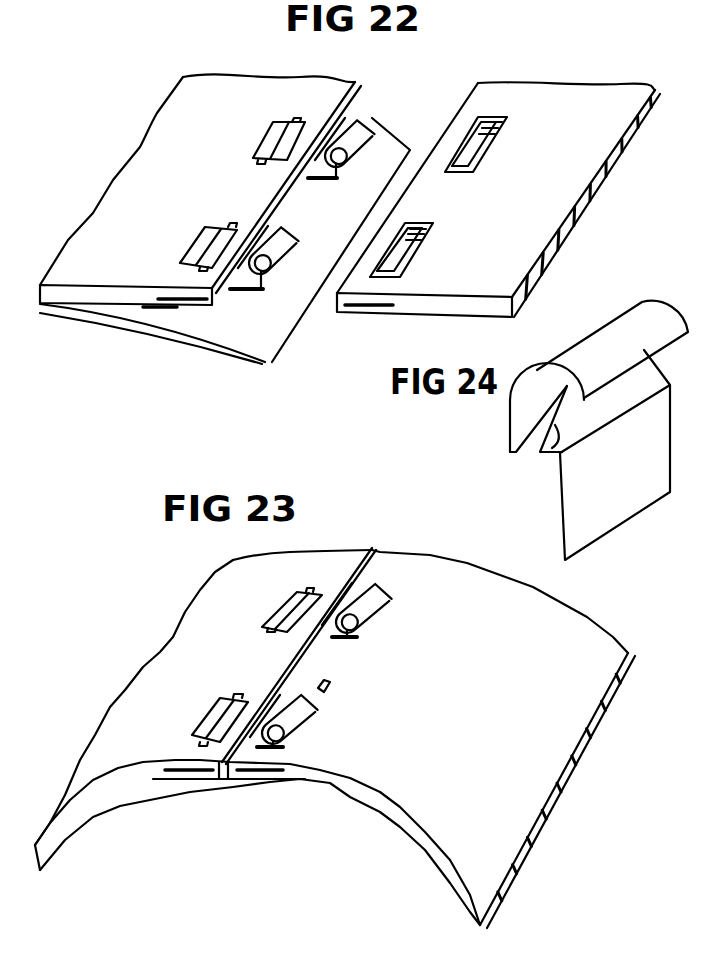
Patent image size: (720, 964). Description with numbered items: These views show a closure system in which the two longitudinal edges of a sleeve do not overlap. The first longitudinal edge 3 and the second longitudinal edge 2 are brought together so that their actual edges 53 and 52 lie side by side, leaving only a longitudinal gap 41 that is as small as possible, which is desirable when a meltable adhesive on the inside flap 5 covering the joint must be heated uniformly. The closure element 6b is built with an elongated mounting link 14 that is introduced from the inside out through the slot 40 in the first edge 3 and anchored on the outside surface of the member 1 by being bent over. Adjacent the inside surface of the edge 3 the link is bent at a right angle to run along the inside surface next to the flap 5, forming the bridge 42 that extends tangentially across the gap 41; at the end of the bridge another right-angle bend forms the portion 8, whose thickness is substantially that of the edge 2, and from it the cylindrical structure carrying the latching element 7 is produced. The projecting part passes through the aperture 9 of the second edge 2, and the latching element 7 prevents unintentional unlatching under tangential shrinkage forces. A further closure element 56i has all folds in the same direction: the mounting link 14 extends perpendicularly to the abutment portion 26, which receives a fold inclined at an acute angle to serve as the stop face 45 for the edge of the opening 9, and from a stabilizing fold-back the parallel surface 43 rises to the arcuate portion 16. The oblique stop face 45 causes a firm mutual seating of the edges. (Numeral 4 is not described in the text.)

In FIG. 22, the member 1 is at (570, 230).
In FIG. 22, the second longitudinal edge 2 is at (500, 88).
In FIG. 23, the second longitudinal edge 2 is at (393, 562).
In FIG. 22, the first longitudinal edge 3 is at (328, 82).
In FIG. 23, the first longitudinal edge 3 is at (307, 567).
In FIG. 22, the slot 4 is at (173, 303).
In FIG. 23, the slot 4 is at (182, 775).
In FIG. 22, the inside flap 5 is at (223, 337).
In FIG. 23, the inside flap 5 is at (213, 790).
In FIG. 22, the closure element 6b is at (376, 112).
In FIG. 23, the closure element 6b is at (368, 599).
In FIG. 22, the latching element 7 is at (267, 223).
In FIG. 23, the latching element 7 is at (352, 573).
In FIG. 22, the portion 8 is at (265, 287).
In FIG. 23, the portion 8 is at (357, 637).
In FIG. 22, the aperture 9 is at (487, 150).
In FIG. 23, the aperture 9 is at (322, 685).
In FIG. 22, the mounting link 14 is at (203, 230).
In FIG. 24, the mounting link 14 is at (657, 442).
In FIG. 23, the mounting link 14 is at (277, 617).
In FIG. 24, the arcuate portion 16 is at (665, 315).
In FIG. 24, the abutment portion 26 is at (645, 392).
In FIG. 22, the slot 40 is at (193, 268).
In FIG. 23, the slot 40 is at (277, 633).
In FIG. 23, the longitudinal gap 41 is at (370, 547).
In FIG. 22, the bridge 42 is at (242, 291).
In FIG. 24, the parallel surface 43 is at (517, 408).
In FIG. 24, the stop face 45 is at (557, 443).
In FIG. 22, the actual edge 52 is at (470, 98).
In FIG. 22, the actual edge 53 is at (362, 87).
In FIG. 24, the closure element 56i is at (575, 337).